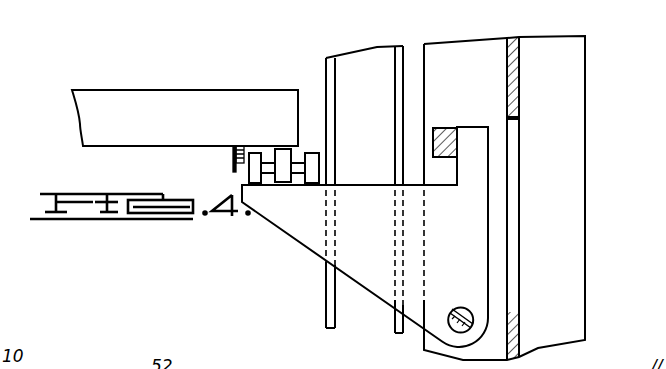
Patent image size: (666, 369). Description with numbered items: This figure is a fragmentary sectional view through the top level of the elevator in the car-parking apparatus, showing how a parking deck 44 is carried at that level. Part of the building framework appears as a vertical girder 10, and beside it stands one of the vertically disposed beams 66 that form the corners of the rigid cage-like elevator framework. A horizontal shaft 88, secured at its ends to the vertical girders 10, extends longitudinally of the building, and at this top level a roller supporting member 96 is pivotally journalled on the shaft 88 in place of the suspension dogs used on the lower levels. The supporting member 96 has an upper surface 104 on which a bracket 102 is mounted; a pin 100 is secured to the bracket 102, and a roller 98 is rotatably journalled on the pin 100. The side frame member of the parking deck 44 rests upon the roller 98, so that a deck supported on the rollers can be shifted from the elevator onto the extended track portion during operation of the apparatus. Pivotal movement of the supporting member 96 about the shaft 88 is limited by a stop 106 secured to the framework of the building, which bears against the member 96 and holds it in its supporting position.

The vertical girder 10 is at (563, 102).
The parking deck 44 is at (162, 102).
The vertically disposed beam 66 is at (344, 58).
The shaft 88 is at (463, 313).
The roller supporting member 96 is at (323, 242).
The roller 98 is at (279, 149).
The pin 100 is at (298, 163).
The bracket 102 is at (310, 166).
The upper surface 104 is at (343, 183).
The stop 106 is at (443, 127).